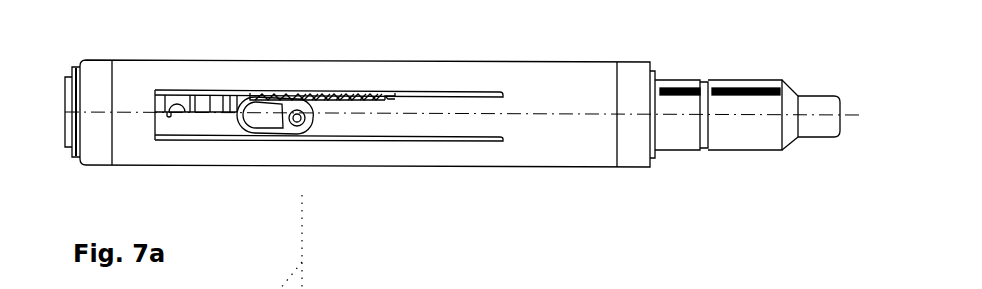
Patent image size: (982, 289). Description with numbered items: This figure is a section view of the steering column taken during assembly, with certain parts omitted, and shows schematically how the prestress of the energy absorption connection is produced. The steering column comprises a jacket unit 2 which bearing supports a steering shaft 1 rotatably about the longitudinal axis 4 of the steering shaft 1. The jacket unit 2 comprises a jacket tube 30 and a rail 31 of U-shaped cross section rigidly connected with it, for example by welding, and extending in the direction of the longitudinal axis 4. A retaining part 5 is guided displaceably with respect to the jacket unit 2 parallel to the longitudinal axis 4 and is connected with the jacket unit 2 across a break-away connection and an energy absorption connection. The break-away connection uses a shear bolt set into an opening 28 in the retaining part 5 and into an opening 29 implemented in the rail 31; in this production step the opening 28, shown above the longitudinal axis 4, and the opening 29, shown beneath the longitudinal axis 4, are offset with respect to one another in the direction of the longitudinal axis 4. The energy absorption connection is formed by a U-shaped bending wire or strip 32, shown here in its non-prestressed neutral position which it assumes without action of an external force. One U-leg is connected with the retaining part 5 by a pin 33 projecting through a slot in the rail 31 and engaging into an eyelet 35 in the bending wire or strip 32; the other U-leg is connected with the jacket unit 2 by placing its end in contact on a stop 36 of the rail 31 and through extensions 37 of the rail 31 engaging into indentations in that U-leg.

The steering shaft 1 is at (722, 140).
The jacket unit 2 is at (497, 172).
The longitudinal axis 4 is at (819, 140).
The retaining part 5 is at (207, 97).
The opening 28 is at (106, 86).
The opening 29 is at (162, 113).
The jacket tube 30 is at (604, 139).
The rail 31 is at (193, 130).
The bending wire or strip 32 is at (306, 112).
The pin 33 is at (283, 131).
The eyelet 35 is at (313, 90).
The stop 36 is at (396, 82).
The extensions 37 is at (352, 104).